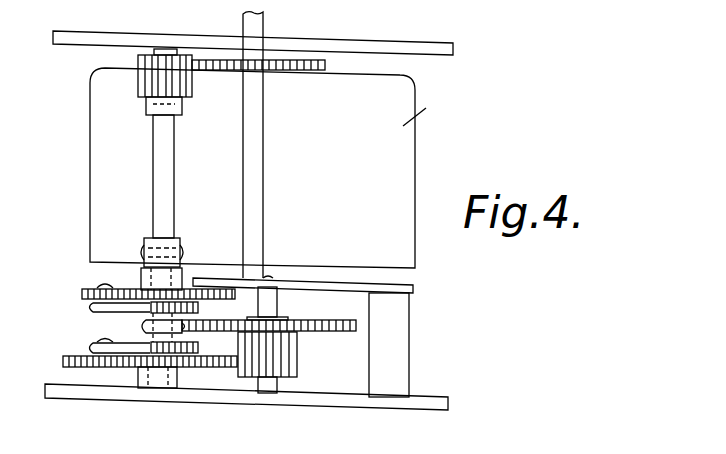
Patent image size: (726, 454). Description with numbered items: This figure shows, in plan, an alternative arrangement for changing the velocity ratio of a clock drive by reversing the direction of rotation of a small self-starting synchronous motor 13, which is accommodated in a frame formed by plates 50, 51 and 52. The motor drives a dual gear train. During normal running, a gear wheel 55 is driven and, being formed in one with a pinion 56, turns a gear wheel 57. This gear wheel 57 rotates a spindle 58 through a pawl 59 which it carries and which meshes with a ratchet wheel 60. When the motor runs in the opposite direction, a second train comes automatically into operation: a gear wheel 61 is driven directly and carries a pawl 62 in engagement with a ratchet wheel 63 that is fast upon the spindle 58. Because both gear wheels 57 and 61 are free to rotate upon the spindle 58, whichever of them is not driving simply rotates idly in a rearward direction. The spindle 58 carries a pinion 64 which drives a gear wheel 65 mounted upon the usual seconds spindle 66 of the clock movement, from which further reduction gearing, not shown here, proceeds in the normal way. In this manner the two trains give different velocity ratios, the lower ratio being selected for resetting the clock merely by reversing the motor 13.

The synchronous motor 13 is at (407, 155).
The plate 50 is at (410, 398).
The plate 51 is at (418, 287).
The plate 52 is at (452, 50).
The gear wheel 55 is at (347, 332).
The pinion 56 is at (290, 355).
The gear wheel 57 is at (127, 360).
The spindle 58 is at (160, 190).
The pawl 59 is at (92, 346).
The ratchet wheel 60 is at (187, 367).
The gear wheel 61 is at (125, 290).
The pawl 62 is at (90, 306).
The ratchet wheel 63 is at (172, 302).
The pinion 64 is at (150, 77).
The gear wheel 65 is at (283, 62).
The seconds spindle 66 is at (243, 25).